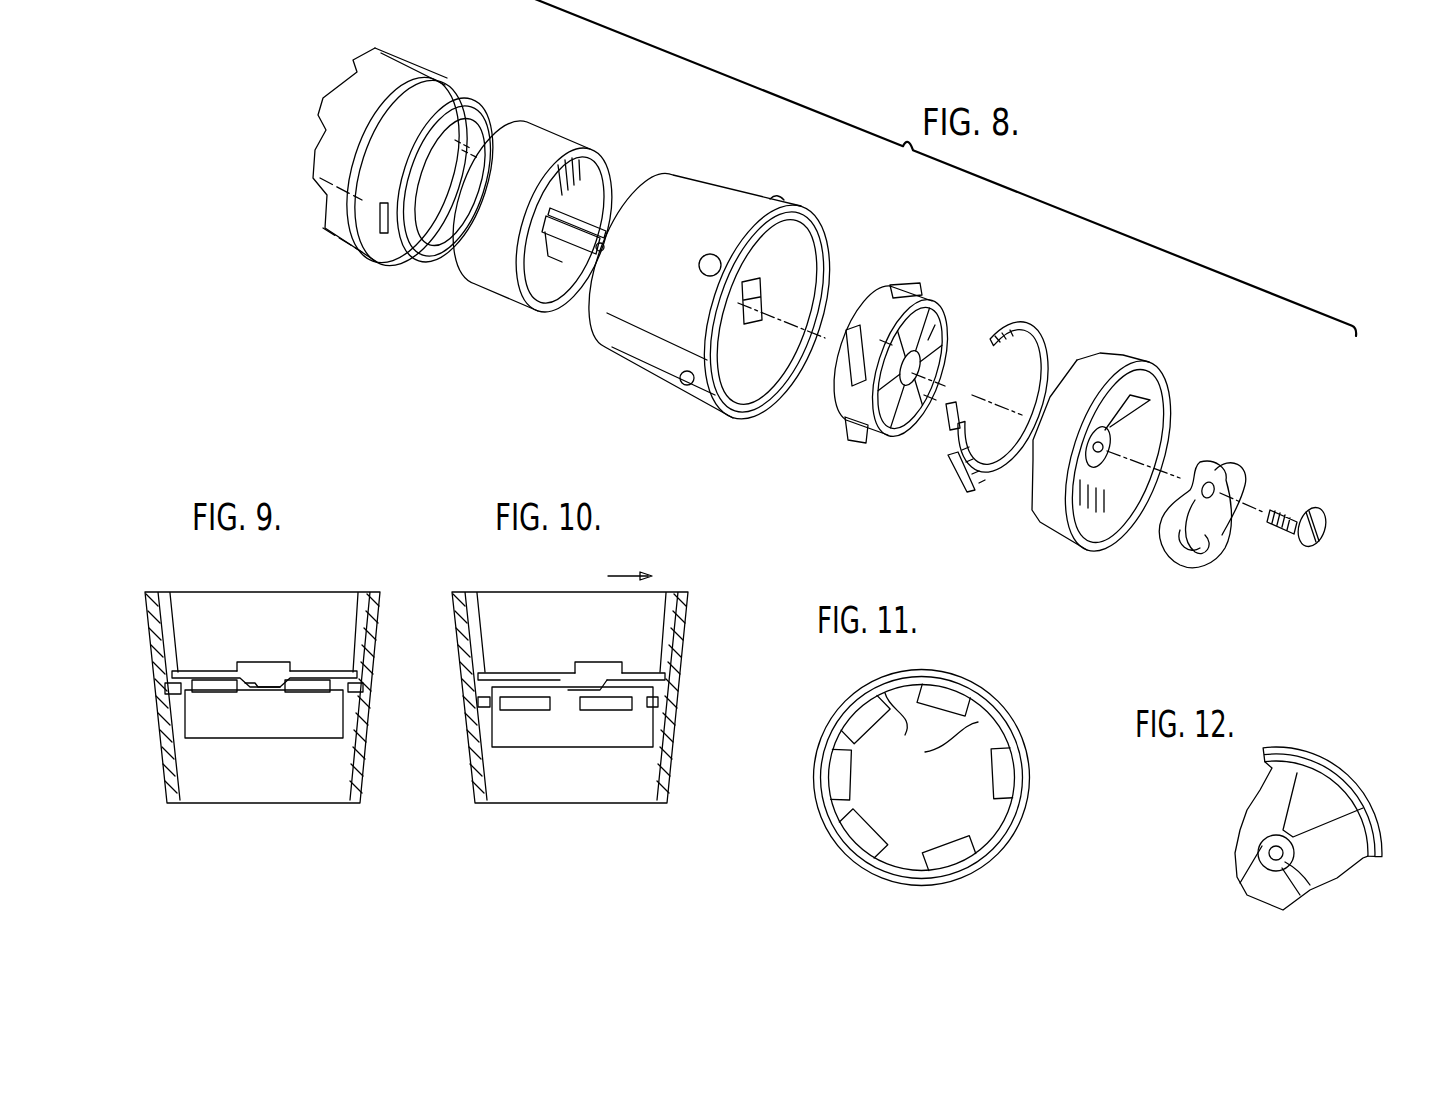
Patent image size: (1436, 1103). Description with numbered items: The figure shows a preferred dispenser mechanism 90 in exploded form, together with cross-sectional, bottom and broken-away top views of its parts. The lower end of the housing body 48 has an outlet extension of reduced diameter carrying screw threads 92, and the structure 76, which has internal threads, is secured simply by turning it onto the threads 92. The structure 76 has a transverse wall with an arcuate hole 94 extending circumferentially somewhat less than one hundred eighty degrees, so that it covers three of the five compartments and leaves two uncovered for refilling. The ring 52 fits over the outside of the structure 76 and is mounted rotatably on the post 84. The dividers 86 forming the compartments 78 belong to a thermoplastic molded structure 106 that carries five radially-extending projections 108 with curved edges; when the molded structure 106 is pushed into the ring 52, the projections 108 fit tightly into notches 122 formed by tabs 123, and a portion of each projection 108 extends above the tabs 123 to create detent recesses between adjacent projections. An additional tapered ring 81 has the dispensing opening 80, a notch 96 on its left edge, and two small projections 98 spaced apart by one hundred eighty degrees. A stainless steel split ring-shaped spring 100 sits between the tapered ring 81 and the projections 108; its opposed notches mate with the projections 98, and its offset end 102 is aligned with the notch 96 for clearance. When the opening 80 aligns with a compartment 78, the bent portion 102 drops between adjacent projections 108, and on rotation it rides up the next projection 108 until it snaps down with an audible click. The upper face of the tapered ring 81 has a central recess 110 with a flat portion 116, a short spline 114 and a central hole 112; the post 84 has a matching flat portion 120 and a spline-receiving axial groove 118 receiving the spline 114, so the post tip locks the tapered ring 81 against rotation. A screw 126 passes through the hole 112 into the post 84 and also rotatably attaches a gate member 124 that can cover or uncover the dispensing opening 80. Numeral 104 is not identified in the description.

In FIG. 8, the housing body 48 is at (337, 145).
In FIG. 8, the screw threads 92 is at (480, 108).
In FIG. 8, the structure 76 is at (540, 132).
In FIG. 8, the arcuate hole 94 is at (537, 308).
In FIG. 8, the spline-receiving axial groove 118 is at (577, 158).
In FIG. 8, the post 84 is at (610, 230).
In FIG. 8, the flat portion 120 is at (600, 250).
In FIG. 8, the ring 52 is at (727, 180).
In FIG. 9, the ring 52 is at (362, 800).
In FIG. 10, the ring 52 is at (687, 627).
In FIG. 11, the ring 52 is at (958, 668).
In FIG. 8, the notches 122 is at (760, 396).
In FIG. 11, the notches 122 is at (845, 773).
In FIG. 8, the dispenser mechanism 90 is at (817, 187).
In FIG. 8, the thermoplastic molded structure 106 is at (873, 300).
In FIG. 9, the thermoplastic molded structure 106 is at (343, 733).
In FIG. 10, the thermoplastic molded structure 106 is at (653, 740).
In FIG. 8, the radially-extending projections 108 is at (913, 287).
In FIG. 9, the radially-extending projections 108 is at (210, 694).
In FIG. 10, the radially-extending projections 108 is at (600, 712).
In FIG. 8, the dividers 86 is at (930, 300).
In FIG. 8, the compartments 78 is at (958, 348).
In FIG. 8, the C-ring 104 is at (995, 327).
In FIG. 8, the bent portion (end of spring) 102 is at (940, 440).
In FIG. 9, the bent portion (end of spring) 102 is at (265, 678).
In FIG. 10, the bent portion (end of spring) 102 is at (595, 690).
In FIG. 8, the split ring-shaped spring 100 is at (950, 480).
In FIG. 9, the split ring-shaped spring 100 is at (360, 676).
In FIG. 10, the split ring-shaped spring 100 is at (680, 680).
In FIG. 8, the notch 96 is at (1030, 487).
In FIG. 9, the notch 96 is at (240, 662).
In FIG. 10, the notch 96 is at (575, 665).
In FIG. 8, the small projections 98 is at (1078, 358).
In FIG. 8, the tapered ring 81 is at (1120, 358).
In FIG. 9, the tapered ring 81 is at (247, 633).
In FIG. 10, the tapered ring 81 is at (552, 633).
In FIG. 12, the tapered ring 81 is at (1353, 780).
In FIG. 8, the dispensing opening 80 is at (1152, 362).
In FIG. 12, the dispensing opening 80 is at (1373, 820).
In FIG. 8, the central hole 112 is at (1108, 440).
In FIG. 12, the central hole 112 is at (1262, 866).
In FIG. 8, the gate member 124 is at (1178, 570).
In FIG. 8, the screw 126 is at (1297, 510).
In FIG. 9, the tabs 123 is at (368, 692).
In FIG. 10, the tabs 123 is at (660, 702).
In FIG. 11, the tabs 123 is at (957, 703).
In FIG. 12, the central recess 110 is at (1262, 835).
In FIG. 12, the flat portion 116 is at (1268, 853).
In FIG. 12, the short spline 114 is at (1297, 853).